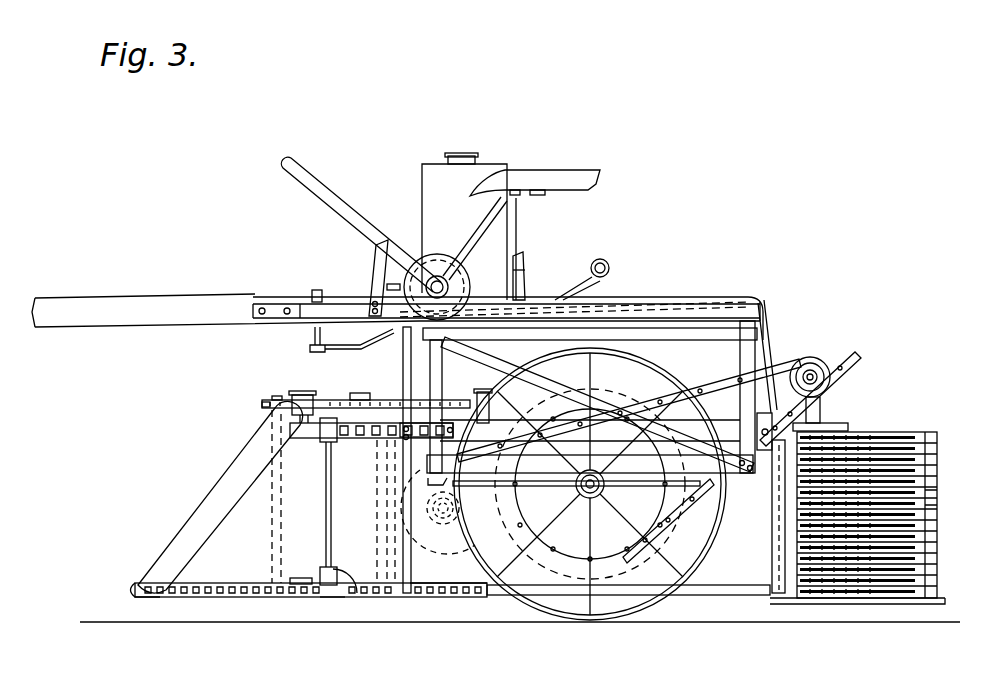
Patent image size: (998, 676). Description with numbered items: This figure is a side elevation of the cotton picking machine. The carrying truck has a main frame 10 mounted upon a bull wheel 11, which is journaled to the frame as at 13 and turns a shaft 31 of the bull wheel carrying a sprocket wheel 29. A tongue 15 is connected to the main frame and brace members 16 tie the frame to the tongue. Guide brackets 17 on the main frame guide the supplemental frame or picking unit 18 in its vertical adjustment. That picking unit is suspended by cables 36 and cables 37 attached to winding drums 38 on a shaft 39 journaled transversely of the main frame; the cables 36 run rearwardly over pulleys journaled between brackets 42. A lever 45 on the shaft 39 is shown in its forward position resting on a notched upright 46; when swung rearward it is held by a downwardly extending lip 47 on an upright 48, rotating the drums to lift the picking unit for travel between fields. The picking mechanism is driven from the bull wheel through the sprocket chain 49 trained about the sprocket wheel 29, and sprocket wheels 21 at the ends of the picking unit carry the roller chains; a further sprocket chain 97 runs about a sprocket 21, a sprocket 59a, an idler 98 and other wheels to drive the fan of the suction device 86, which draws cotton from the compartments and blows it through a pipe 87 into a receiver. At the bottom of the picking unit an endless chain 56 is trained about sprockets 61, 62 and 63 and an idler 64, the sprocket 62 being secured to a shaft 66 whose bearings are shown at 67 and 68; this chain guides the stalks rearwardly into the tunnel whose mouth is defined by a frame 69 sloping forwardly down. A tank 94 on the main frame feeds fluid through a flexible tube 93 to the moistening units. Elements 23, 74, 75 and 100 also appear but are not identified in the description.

The tongue 15 is at (92, 306).
The brace members 16 is at (340, 300).
The cables 36 is at (695, 295).
The main frame 10 is at (681, 341).
The lever 45 is at (357, 220).
The notched upright 46 is at (372, 259).
The winding drums 38 is at (442, 262).
The shaft 39 is at (447, 283).
The tank 94 is at (493, 170).
The downwardly extending lip 47 is at (524, 262).
The upright 48 is at (527, 274).
The pipe 87 is at (605, 259).
The brackets 42 is at (745, 294).
The supplemental frame or picking unit 18 is at (755, 347).
The sprocket chain 49 is at (648, 400).
The bull wheel 11 is at (693, 397).
The bull wheel journal 13 is at (538, 472).
The shaft of the bull wheel 31 is at (600, 470).
The sprocket wheel 29 is at (662, 533).
The pulley bar 100 is at (842, 372).
The stack 23 is at (876, 437).
The stack guide 74 is at (937, 498).
The platform 75 is at (876, 590).
The cables 37 is at (403, 383).
The guide brackets 17 is at (448, 400).
The sprocket wheels 21 is at (470, 452).
The flexible tube 93 is at (360, 400).
The idler 98 is at (303, 395).
The sprocket 59a is at (280, 395).
The sprocket chain 97 is at (262, 404).
The shaft 66 is at (322, 442).
The bearing 67 is at (326, 470).
The bearing 68 is at (333, 582).
The frame 69 is at (238, 455).
The sprocket 61 is at (148, 583).
The endless chain 56 is at (221, 585).
The idler 64 is at (301, 579).
The sprocket 63 is at (472, 586).
The sprocket 62 is at (330, 598).
The suction device 86 is at (444, 540).